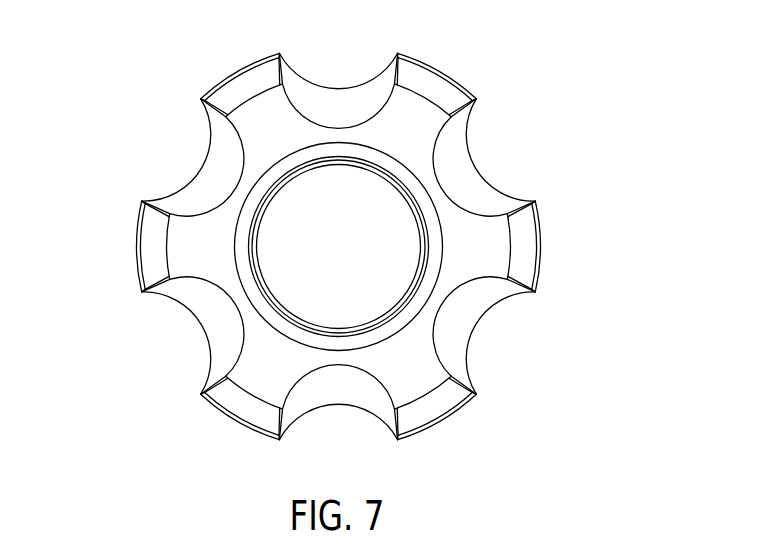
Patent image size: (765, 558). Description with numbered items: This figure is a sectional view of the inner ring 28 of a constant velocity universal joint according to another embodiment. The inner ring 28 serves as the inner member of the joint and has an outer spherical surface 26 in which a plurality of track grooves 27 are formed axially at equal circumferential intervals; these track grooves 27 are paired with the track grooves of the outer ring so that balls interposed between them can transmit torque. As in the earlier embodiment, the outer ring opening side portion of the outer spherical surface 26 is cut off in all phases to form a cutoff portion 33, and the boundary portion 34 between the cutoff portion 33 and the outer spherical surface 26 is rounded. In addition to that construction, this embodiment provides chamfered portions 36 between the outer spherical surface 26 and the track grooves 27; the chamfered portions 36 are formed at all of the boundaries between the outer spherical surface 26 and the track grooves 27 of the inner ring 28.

The outer spherical surface 26 is at (435, 63).
The track grooves 27 is at (207, 177).
The inner ring 28 is at (547, 143).
The cutoff portion 33 is at (235, 85).
The boundary portion 34 is at (463, 90).
The chamfered portions 36 is at (284, 63).